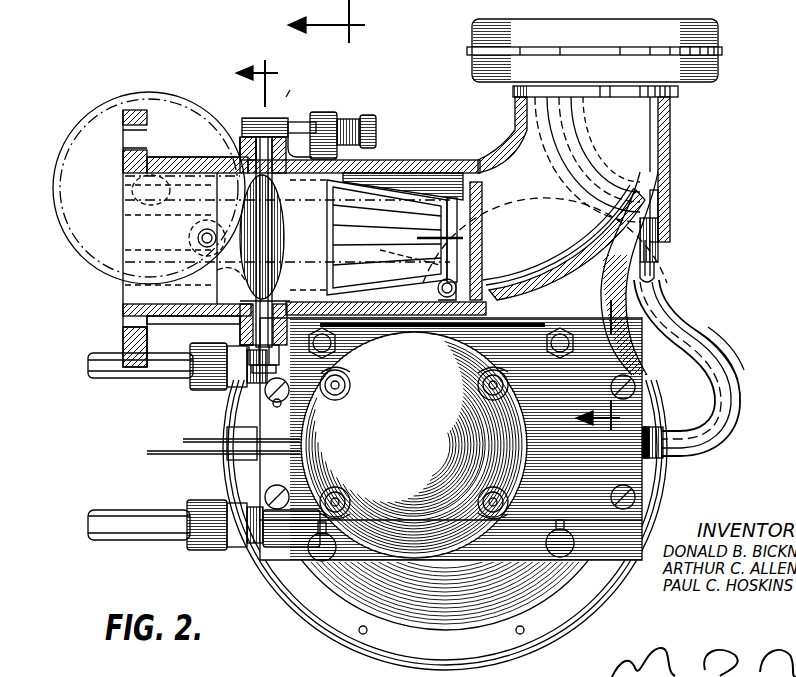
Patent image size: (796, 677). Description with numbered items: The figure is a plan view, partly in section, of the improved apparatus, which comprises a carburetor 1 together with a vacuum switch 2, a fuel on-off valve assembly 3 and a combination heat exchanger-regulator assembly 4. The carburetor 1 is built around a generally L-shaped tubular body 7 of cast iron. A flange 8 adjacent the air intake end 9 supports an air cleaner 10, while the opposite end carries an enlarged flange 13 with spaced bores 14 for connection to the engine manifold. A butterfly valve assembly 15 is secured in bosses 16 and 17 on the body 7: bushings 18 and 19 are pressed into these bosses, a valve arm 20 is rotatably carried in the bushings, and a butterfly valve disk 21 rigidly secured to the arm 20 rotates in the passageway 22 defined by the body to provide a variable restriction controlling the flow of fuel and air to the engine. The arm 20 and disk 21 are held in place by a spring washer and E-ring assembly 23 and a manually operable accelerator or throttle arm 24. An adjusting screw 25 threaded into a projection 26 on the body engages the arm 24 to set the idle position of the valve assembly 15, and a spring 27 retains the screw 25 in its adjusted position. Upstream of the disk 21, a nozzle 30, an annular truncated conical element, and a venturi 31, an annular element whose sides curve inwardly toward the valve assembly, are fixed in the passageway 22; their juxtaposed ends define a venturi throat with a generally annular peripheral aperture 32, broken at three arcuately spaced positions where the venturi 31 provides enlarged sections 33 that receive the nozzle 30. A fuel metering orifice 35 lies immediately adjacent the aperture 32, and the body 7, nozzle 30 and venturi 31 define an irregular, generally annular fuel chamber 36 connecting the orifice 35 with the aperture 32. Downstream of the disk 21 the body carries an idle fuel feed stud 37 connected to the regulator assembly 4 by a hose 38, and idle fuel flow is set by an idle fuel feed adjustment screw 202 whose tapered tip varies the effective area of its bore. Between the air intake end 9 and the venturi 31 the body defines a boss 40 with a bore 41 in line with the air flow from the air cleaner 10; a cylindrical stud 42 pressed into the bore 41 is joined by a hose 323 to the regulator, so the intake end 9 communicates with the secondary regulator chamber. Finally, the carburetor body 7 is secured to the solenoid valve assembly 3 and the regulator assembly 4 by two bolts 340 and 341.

The carburetor 1 is at (377, 165).
The vacuum switch 2 is at (60, 147).
The fuel on-off valve assembly 3 is at (321, 27).
The combination heat exchanger-regulator assembly 4 is at (419, 244).
The tubular body 7 is at (672, 126).
The flange 8 is at (676, 100).
The air intake end 9 is at (517, 100).
The air cleaner 10 is at (718, 35).
The enlarged flange 13 is at (130, 110).
The spaced bores 14 is at (128, 137).
The butterfly valve assembly 15 is at (288, 97).
The boss 16 is at (242, 152).
The boss 17 is at (240, 322).
The bushing 18 is at (238, 163).
The bushing 19 is at (250, 300).
The valve arm 20 is at (282, 283).
The butterfly valve disk 21 is at (215, 268).
The passageway 22 is at (150, 193).
The spring washer and E-ring assembly 23 is at (282, 352).
The accelerator or throttle arm 24 is at (244, 122).
The adjusting screw 25 is at (375, 142).
The projection 26 is at (325, 113).
The spring 27 is at (355, 118).
The nozzle 30 is at (398, 182).
The venturi 31 is at (462, 192).
The annular peripheral aperture 32 is at (470, 198).
The enlarged sections 33 is at (415, 220).
The fuel metering orifice 35 is at (462, 290).
The fuel chamber 36 is at (432, 185).
The idle fuel feed stud 37 is at (197, 240).
The hose 38 is at (627, 296).
The boss 40 is at (665, 220).
The bore 41 is at (660, 198).
The cylindrical stud 42 is at (666, 242).
The idle fuel feed adjustment screw 202 is at (665, 462).
The hose 323 is at (698, 345).
The bolt 340 is at (322, 347).
The bolt 341 is at (556, 333).